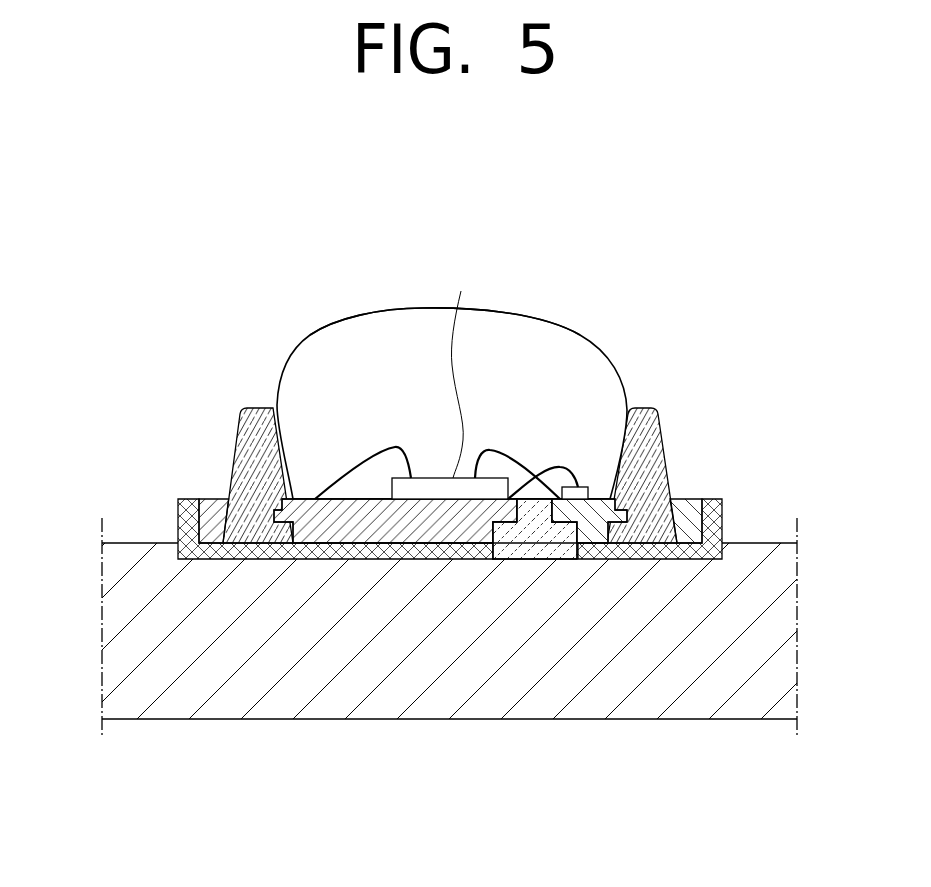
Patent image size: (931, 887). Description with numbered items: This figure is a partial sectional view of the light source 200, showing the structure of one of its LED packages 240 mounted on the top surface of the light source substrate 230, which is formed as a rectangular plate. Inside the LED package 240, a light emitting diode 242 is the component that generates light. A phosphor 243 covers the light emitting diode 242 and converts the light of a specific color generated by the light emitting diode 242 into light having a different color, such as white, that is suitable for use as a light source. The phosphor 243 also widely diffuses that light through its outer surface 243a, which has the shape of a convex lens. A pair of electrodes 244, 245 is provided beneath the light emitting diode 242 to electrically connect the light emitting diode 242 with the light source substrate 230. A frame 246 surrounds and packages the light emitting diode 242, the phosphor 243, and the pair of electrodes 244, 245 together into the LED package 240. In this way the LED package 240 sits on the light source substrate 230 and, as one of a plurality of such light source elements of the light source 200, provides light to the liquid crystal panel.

The light source 200 is at (402, 407).
The light source substrate 230 is at (122, 637).
The LED package 240 is at (432, 377).
The light emitting diode 242 is at (458, 373).
The phosphor 243 is at (585, 388).
The outer surface 243a is at (580, 327).
The electrode 244 is at (207, 500).
The electrode 245 is at (687, 507).
The frame 246 is at (248, 445).